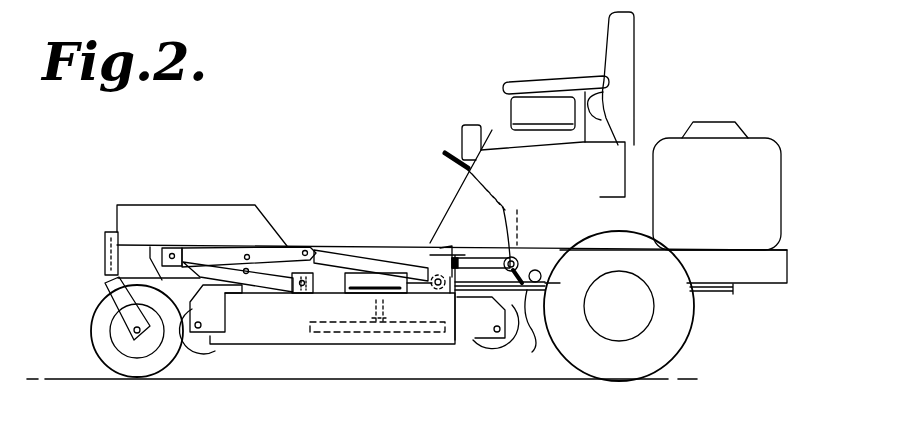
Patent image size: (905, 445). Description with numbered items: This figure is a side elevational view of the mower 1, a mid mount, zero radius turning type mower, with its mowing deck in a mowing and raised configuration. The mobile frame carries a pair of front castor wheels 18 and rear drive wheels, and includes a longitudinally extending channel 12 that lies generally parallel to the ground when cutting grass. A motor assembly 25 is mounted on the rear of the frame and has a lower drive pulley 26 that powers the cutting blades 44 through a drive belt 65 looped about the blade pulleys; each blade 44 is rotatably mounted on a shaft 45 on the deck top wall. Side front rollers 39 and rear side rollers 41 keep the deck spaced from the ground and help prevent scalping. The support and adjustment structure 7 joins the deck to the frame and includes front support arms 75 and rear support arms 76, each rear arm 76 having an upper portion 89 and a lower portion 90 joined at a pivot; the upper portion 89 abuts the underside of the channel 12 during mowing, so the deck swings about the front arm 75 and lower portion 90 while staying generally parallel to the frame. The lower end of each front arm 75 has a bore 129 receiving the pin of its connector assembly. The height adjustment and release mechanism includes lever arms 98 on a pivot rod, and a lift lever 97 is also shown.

The mower 1 is at (675, 57).
The support and adjustment structure 7 is at (348, 248).
The channel 12 is at (768, 272).
The front castor wheel 18 is at (90, 329).
The motor assembly 25 is at (758, 138).
The drive pulley 26 is at (733, 294).
The side front roller 39 is at (203, 352).
The rear side roller 41 is at (511, 350).
The cutting blade 44 is at (432, 334).
The shaft 45 is at (362, 333).
The drive belt 65 is at (544, 290).
The front support arm 75 is at (274, 262).
The rear support arm 76 is at (302, 252).
The upper portion 89 is at (207, 247).
The lower portion 90 is at (374, 257).
The lift lever 97 is at (441, 244).
The lever arm 98 is at (487, 258).
The bore 129 is at (296, 299).